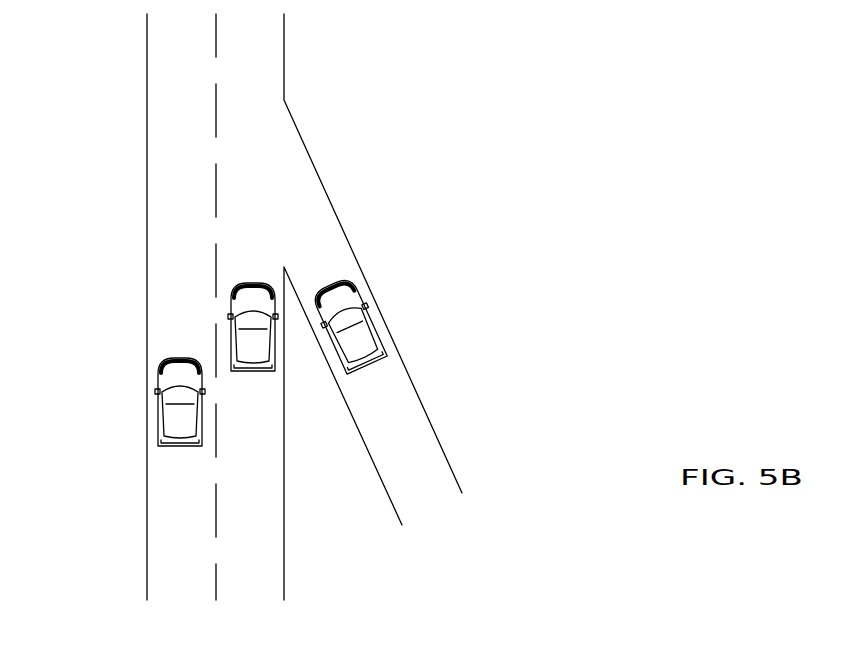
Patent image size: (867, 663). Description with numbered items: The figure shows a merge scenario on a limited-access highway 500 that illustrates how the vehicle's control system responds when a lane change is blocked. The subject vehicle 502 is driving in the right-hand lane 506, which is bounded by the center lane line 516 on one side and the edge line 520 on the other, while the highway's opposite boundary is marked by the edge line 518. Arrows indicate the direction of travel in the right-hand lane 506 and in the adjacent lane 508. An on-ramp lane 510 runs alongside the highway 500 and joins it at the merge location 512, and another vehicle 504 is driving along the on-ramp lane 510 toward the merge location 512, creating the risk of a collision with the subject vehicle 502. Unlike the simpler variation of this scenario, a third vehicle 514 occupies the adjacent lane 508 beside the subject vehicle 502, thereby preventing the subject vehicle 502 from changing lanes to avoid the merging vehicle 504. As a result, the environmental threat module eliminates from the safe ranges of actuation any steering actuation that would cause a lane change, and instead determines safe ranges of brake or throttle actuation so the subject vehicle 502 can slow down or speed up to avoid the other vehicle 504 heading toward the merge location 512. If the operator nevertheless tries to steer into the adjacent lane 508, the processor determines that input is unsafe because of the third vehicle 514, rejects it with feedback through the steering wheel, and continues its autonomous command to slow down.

The limited-access highway 500 is at (348, 152).
The subject vehicle 502 is at (252, 340).
The other vehicle 504 is at (357, 331).
The right-hand lane 506 is at (254, 550).
The adjacent lane 508 is at (182, 550).
The on-ramp lane 510 is at (421, 486).
The merge location 512 is at (282, 213).
The third vehicle 514 is at (182, 410).
The center lane line 516 is at (216, 179).
The edge line 518 is at (147, 118).
The edge line 520 is at (284, 58).